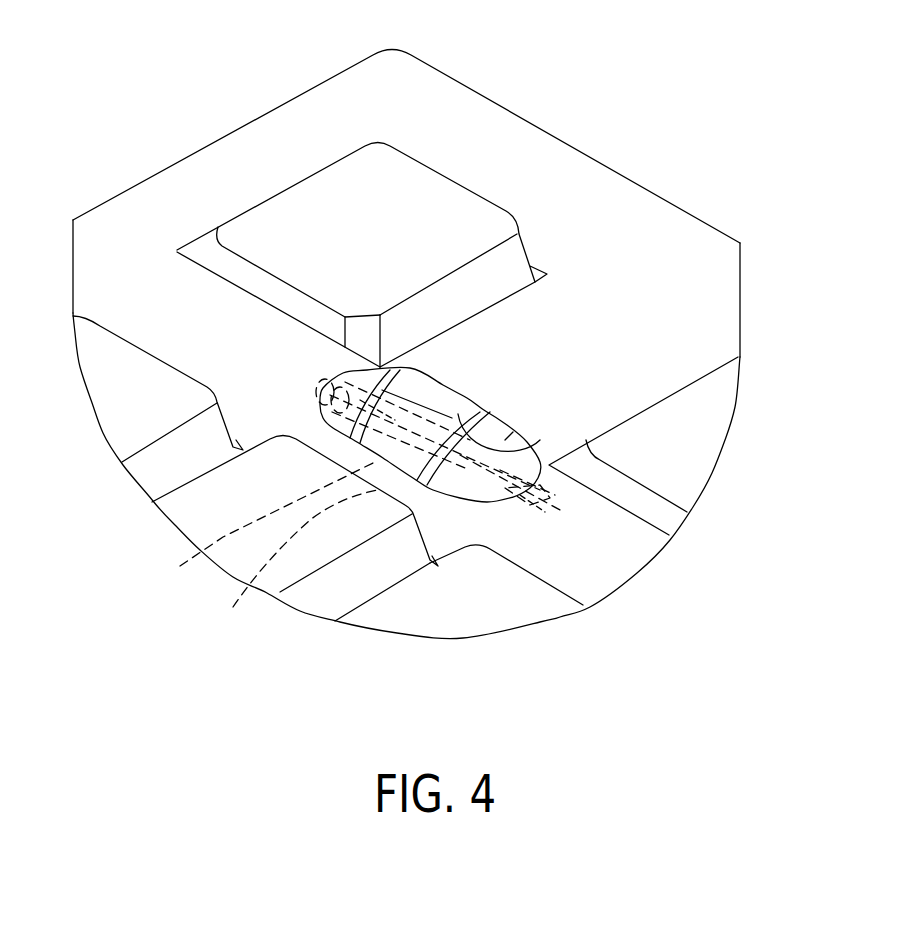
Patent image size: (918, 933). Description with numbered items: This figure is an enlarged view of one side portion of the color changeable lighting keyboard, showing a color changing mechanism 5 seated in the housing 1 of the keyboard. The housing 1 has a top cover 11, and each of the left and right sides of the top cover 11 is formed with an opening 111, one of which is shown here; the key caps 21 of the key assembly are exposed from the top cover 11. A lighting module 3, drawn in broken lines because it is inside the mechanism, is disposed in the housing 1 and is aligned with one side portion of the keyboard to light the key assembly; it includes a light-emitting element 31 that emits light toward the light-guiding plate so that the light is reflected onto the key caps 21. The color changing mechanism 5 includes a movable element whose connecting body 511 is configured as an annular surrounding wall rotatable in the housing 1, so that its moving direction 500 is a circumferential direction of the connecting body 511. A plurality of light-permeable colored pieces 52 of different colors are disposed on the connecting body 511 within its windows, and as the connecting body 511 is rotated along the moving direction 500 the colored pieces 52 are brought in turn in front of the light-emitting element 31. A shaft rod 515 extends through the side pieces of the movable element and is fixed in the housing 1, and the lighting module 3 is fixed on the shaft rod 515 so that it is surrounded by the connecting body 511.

The housing 1 is at (487, 90).
The top cover 11 is at (630, 178).
The opening 111 is at (513, 432).
The key caps 21 is at (197, 518).
The lighting module 3 is at (358, 486).
The light-emitting element 31 is at (296, 561).
The color changing mechanism 5 is at (478, 390).
The moving direction 500 is at (430, 377).
The connecting body 511 is at (377, 414).
The shaft rod 515 is at (560, 530).
The colored pieces 52 is at (413, 410).